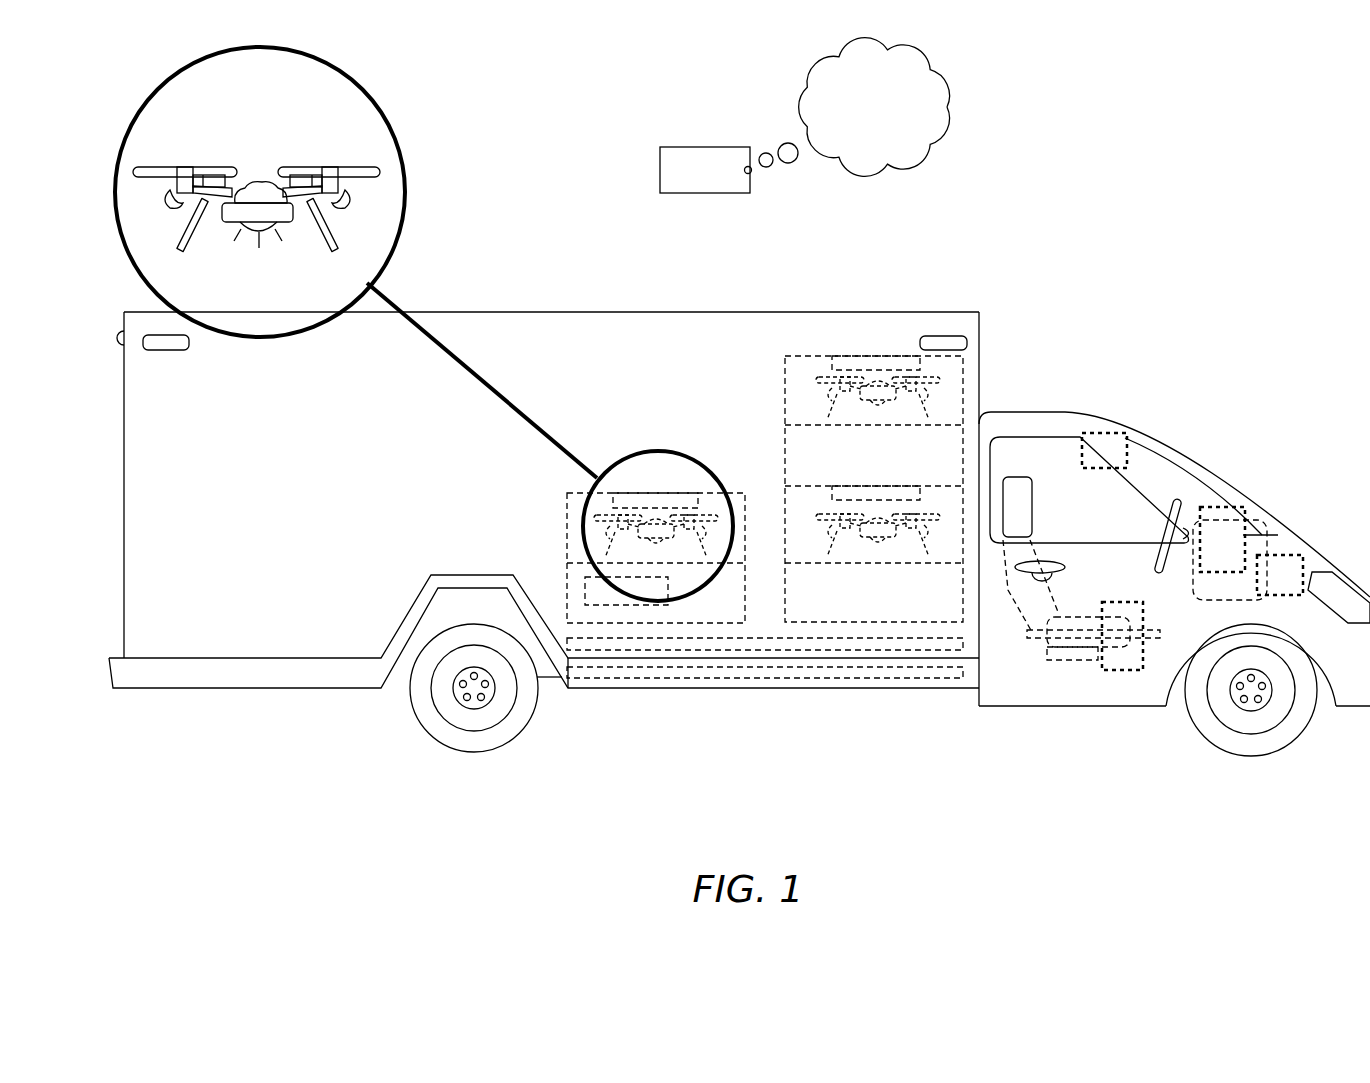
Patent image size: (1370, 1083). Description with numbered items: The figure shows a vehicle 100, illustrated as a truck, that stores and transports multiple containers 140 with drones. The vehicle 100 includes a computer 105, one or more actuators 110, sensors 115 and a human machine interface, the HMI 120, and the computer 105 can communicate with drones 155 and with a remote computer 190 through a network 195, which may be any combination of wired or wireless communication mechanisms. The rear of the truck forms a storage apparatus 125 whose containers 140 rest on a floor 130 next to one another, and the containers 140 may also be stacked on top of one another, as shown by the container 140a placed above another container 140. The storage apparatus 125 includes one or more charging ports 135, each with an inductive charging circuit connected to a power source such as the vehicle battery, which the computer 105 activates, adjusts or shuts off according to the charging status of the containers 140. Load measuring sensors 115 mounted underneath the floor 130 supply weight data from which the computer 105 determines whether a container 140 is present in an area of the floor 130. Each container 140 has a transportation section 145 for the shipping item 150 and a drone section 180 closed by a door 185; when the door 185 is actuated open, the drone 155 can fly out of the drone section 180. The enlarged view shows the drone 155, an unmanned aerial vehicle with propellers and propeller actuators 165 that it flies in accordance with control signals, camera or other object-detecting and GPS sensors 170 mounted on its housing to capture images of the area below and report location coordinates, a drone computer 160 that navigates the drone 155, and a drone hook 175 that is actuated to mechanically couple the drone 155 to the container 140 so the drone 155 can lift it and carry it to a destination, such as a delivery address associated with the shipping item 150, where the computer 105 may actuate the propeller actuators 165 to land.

The vehicle 100 is at (1137, 205).
The computer 105 is at (1123, 668).
The actuator 110 is at (1282, 555).
The sensor 115 is at (1110, 433).
The human machine interface 120 is at (1222, 510).
The storage apparatus 125 is at (827, 312).
The floor 130 is at (325, 655).
The charging port 135 is at (565, 690).
The container 140 is at (575, 392).
The first drone 140a is at (783, 358).
The transportation section 145 is at (709, 546).
The shipping item 150 is at (648, 606).
The drone 155 is at (327, 312).
The drone computer 160 is at (290, 218).
The propeller actuators 165 is at (170, 167).
The camera sensors 170 is at (165, 208).
The drone hook 175 is at (258, 237).
The drone section 180 is at (687, 615).
The door 185 is at (667, 494).
The remote computer 190 is at (696, 186).
The network 195 is at (865, 119).